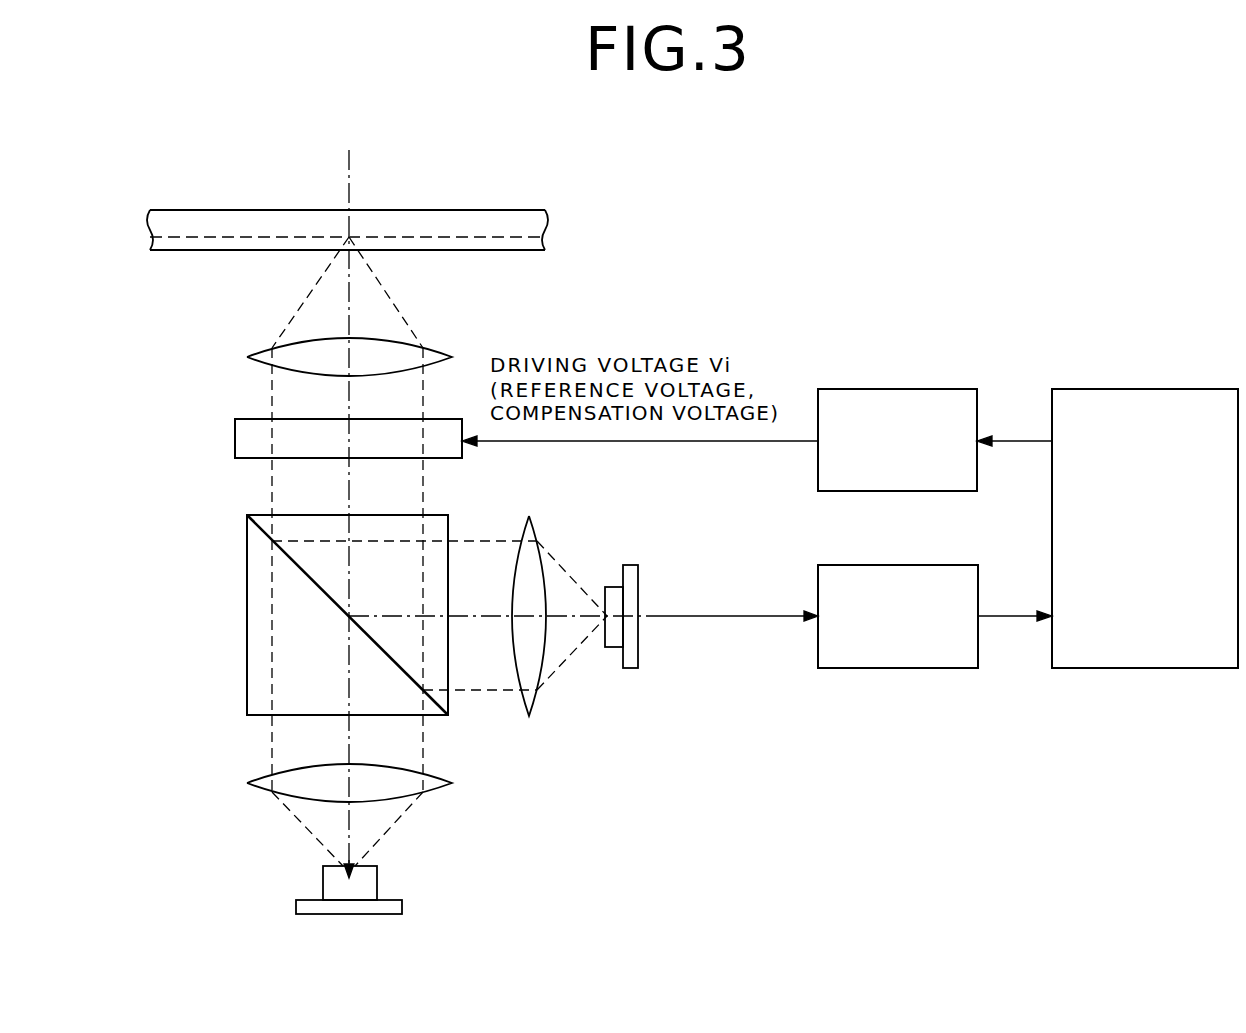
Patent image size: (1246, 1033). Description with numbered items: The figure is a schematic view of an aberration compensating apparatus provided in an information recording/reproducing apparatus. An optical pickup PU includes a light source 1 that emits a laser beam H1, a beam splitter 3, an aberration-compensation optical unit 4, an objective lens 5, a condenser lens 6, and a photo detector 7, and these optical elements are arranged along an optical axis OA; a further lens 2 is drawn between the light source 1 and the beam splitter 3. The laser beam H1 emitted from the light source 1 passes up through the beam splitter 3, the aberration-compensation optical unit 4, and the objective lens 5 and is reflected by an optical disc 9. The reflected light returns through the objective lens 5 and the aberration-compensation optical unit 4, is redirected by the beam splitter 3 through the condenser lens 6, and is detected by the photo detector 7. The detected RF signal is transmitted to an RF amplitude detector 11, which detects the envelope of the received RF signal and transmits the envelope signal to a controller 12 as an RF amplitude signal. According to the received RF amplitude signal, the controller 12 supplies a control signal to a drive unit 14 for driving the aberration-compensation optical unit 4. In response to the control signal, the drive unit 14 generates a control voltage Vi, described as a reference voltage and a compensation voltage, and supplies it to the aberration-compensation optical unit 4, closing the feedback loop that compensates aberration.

The light source 1 is at (402, 906).
The collimator lens 2 is at (452, 783).
The beam splitter 3 is at (247, 541).
The aberration-compensation optical unit 4 is at (235, 442).
The objective lens 5 is at (440, 350).
The condenser lens 6 is at (537, 530).
The photo detector 7 is at (640, 568).
The optical disc 9 is at (497, 210).
The RF amplitude detector 11 is at (845, 668).
The controller 12 is at (1183, 389).
The drive unit 14 is at (935, 389).
The laser beam H1 is at (390, 825).
The optical axis OA is at (575, 500).
The optical pickup PU is at (195, 355).